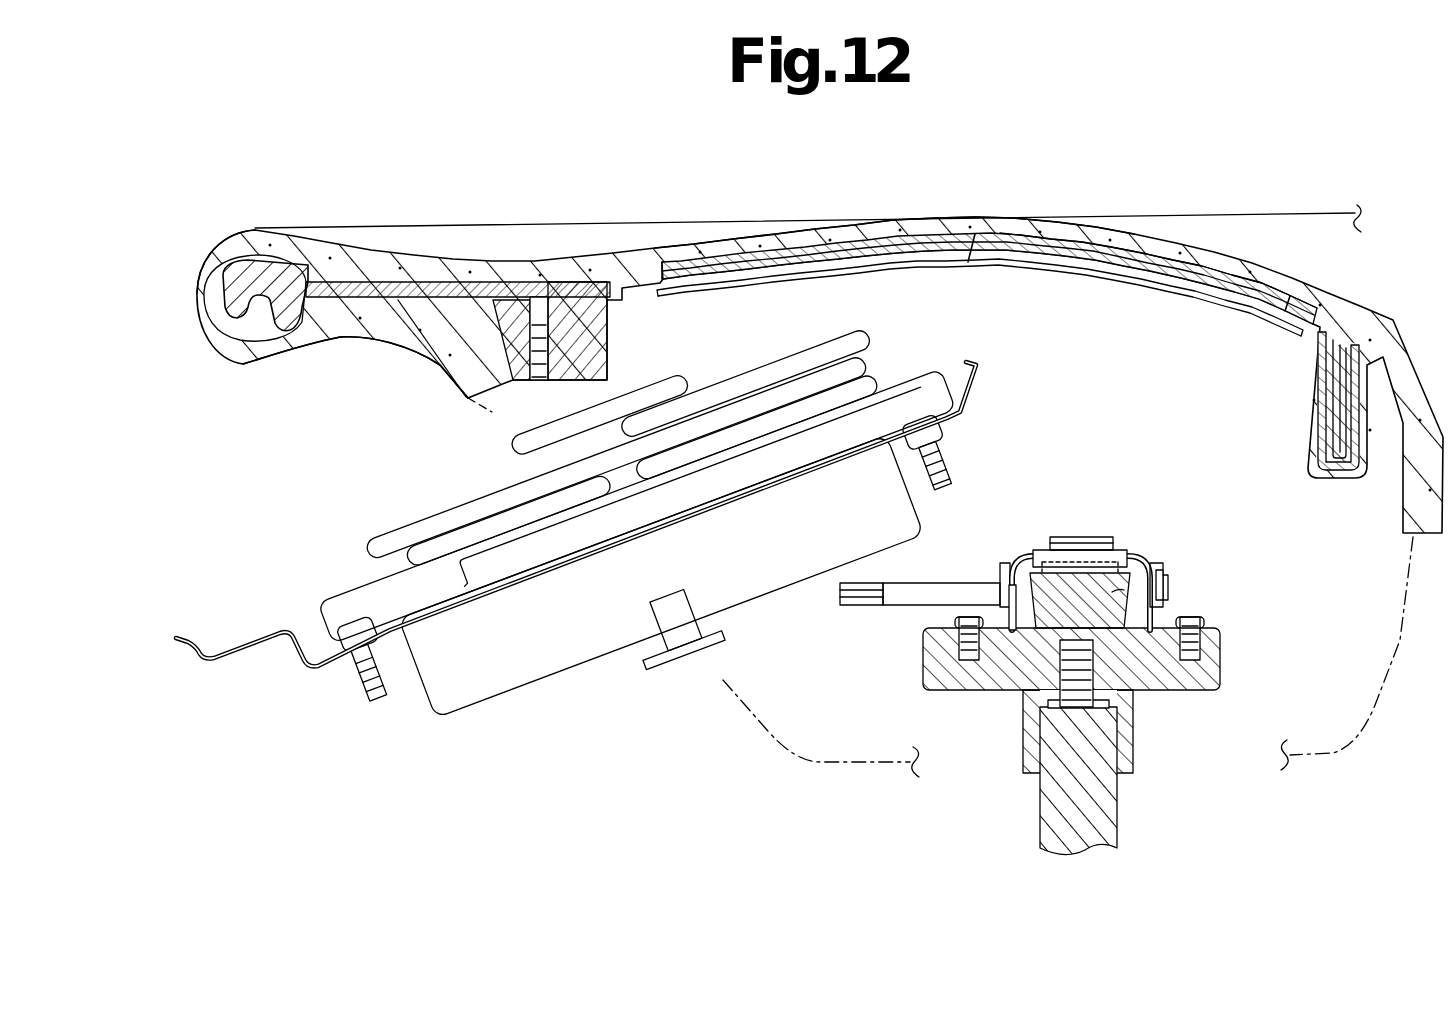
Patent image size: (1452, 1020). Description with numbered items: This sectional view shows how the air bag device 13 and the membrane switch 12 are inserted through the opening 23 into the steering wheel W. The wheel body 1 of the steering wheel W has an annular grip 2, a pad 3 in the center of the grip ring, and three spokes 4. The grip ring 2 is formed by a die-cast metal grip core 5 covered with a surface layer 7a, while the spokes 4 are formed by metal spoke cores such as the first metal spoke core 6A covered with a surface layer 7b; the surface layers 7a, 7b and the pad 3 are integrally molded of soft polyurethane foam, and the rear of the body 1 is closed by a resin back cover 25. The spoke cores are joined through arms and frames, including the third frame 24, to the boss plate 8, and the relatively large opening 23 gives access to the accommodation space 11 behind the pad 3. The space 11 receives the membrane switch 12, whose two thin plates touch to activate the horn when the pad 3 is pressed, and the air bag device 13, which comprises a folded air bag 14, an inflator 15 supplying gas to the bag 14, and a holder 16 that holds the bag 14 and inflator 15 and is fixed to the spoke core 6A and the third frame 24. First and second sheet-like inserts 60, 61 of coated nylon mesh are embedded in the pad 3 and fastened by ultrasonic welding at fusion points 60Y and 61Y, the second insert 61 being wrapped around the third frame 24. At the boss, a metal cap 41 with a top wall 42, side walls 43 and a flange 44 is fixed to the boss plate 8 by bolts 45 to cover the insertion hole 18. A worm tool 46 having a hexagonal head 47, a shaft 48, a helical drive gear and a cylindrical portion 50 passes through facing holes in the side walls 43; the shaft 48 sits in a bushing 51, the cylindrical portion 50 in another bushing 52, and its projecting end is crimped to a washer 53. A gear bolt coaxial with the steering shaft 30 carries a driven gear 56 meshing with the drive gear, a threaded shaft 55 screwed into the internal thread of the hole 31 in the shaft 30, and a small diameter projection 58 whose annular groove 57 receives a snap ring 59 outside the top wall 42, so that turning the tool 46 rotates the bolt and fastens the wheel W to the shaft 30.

The wheel body 1 is at (537, 190).
The annular grip 2 is at (255, 228).
The pad 3 is at (885, 222).
The spokes 4 is at (428, 258).
The metal grip core 5 is at (250, 335).
The first metal spoke core 6A is at (395, 318).
The surface layer 7a is at (205, 262).
The surface layer 7b is at (351, 320).
The boss plate 8 is at (1054, 647).
The accommodation space 11 is at (980, 297).
The membrane switch 12 is at (1118, 293).
The air bag device 13 is at (906, 358).
The folded air bag 14 is at (745, 398).
The inflator 15 is at (470, 592).
The holder 16 is at (290, 658).
The insertion hole 18 is at (1043, 775).
The opening 23 is at (742, 666).
The third frame 24 is at (1330, 478).
The resin back cover 25 is at (767, 735).
The steering shaft 30 is at (1120, 820).
The hole 31 is at (1028, 745).
The metal cap 41 is at (1135, 548).
The top wall 42 is at (1135, 560).
The side walls 43 is at (1005, 565).
The flange 44 is at (950, 630).
The bolts 45 is at (1000, 583).
The worm tool 46 is at (902, 654).
The hexagonal head 47 is at (850, 608).
The shaft 48 is at (905, 583).
The cylindrical portion 50 is at (1168, 585).
The bushing 51 is at (1012, 582).
The bushing 52 is at (1152, 560).
The washer 53 is at (1160, 565).
The threaded shaft 55 is at (1120, 700).
The driven gear 56 is at (1120, 592).
The annular groove 57 is at (1080, 555).
The small diameter projection 58 is at (1095, 550).
The snap ring 59 is at (1052, 540).
The first sheet-like insert 60 is at (793, 253).
The fusion points 60Y is at (672, 262).
The second sheet-like insert 61 is at (1033, 247).
The fusion points 61Y is at (1280, 275).
The steering wheel W is at (1203, 186).